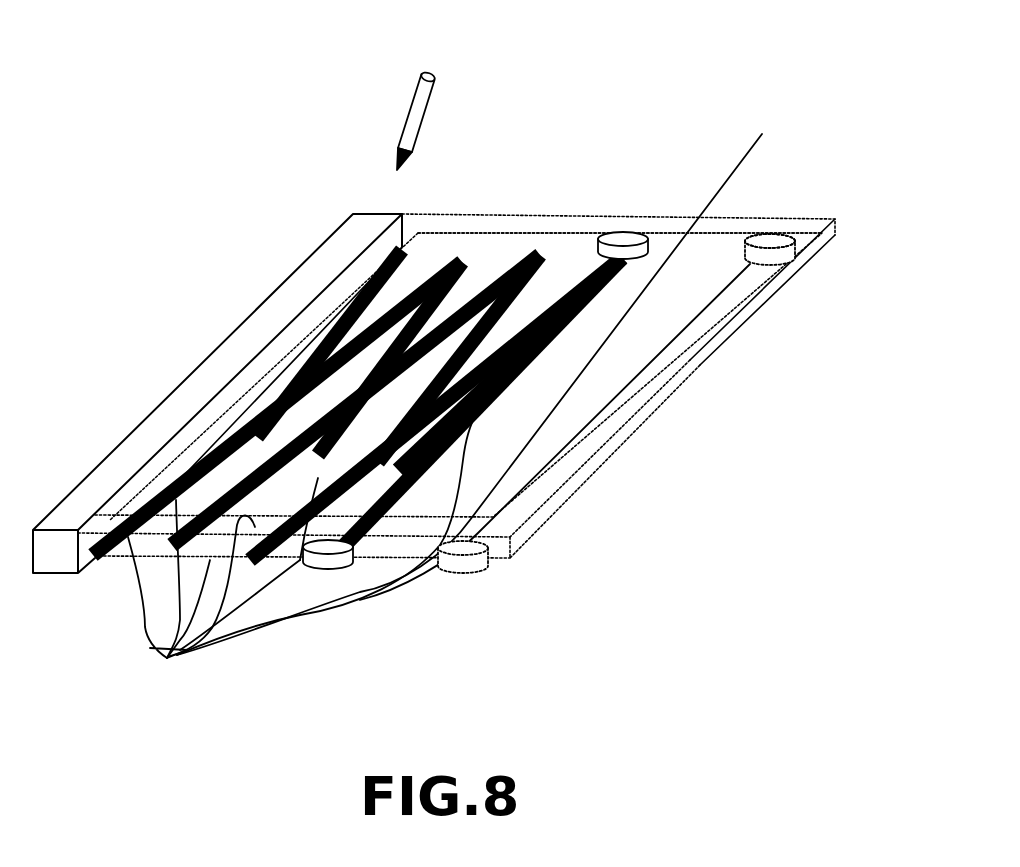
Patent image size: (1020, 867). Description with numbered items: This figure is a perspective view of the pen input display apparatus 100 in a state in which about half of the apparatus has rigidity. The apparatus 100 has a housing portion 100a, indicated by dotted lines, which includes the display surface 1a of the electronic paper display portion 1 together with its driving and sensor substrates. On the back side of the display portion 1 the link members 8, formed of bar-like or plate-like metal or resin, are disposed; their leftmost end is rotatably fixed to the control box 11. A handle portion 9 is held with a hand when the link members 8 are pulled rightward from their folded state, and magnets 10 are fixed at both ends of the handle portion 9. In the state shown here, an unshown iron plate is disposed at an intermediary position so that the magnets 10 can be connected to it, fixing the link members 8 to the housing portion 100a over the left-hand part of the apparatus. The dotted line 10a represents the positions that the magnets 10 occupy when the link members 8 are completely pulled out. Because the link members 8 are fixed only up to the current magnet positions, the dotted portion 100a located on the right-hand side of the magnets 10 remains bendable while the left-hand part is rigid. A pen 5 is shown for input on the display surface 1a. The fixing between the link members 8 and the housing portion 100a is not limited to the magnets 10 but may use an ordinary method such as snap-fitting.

The electronic paper display portion 1 is at (493, 175).
The display surface 1a is at (527, 232).
The pen / stylus 5 is at (400, 108).
The link member 8 is at (166, 613).
The handle portion 9 is at (505, 388).
The magnets 10 is at (621, 233).
The dotted line 10a is at (772, 234).
The control box 11 is at (307, 288).
The pen input display apparatus 100 is at (200, 337).
The housing portion 100a is at (627, 440).